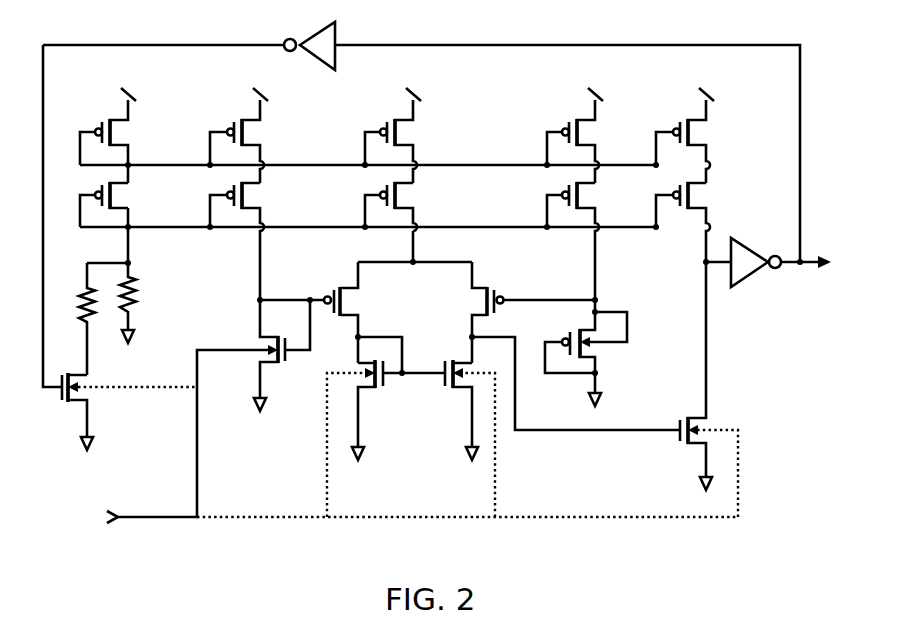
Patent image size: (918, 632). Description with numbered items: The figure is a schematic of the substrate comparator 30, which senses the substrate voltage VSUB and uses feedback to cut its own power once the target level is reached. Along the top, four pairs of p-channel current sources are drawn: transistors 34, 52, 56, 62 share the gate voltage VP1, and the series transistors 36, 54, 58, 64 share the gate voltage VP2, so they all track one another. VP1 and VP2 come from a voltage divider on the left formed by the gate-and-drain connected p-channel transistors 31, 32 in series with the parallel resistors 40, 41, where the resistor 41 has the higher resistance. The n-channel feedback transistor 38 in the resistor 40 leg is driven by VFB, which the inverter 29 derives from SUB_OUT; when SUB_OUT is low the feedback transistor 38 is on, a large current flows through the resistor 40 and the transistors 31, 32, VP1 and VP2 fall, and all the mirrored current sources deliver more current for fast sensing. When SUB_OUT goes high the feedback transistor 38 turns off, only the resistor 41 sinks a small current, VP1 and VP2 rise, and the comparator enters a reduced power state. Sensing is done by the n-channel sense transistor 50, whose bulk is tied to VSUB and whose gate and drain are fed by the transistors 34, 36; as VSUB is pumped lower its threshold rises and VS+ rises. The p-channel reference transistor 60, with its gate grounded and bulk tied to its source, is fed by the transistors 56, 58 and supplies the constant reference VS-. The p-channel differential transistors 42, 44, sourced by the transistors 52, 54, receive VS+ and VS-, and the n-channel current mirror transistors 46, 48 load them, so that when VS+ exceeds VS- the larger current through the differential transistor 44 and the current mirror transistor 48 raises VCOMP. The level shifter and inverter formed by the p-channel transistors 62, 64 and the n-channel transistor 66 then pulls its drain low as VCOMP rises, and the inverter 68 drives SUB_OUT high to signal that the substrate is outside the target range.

The inverter 29 is at (300, 27).
The substrate comparator 30 is at (452, 307).
The p-channel transistor 31 is at (122, 132).
The p-channel transistor 32 is at (122, 195).
The p-channel transistor 34 is at (253, 131).
The p-channel transistor 36 is at (253, 194).
The feedback transistor 38 is at (92, 393).
The resistor 40 is at (77, 316).
The resistor 41 is at (137, 305).
The differential transistor 42 is at (350, 297).
The differential transistor 44 is at (476, 293).
The current mirror transistor 46 is at (372, 389).
The current mirror transistor 48 is at (452, 389).
The sense transistor 50 is at (268, 364).
The p-channel transistor 52 is at (405, 131).
The p-channel transistor 54 is at (405, 194).
The p-channel transistor 56 is at (587, 131).
The p-channel transistor 58 is at (587, 194).
The reference transistor 60 is at (595, 352).
The p-channel transistor 62 is at (698, 131).
The p-channel transistor 64 is at (698, 194).
The n-channel transistor 66 is at (693, 453).
The inverter 68 is at (753, 269).